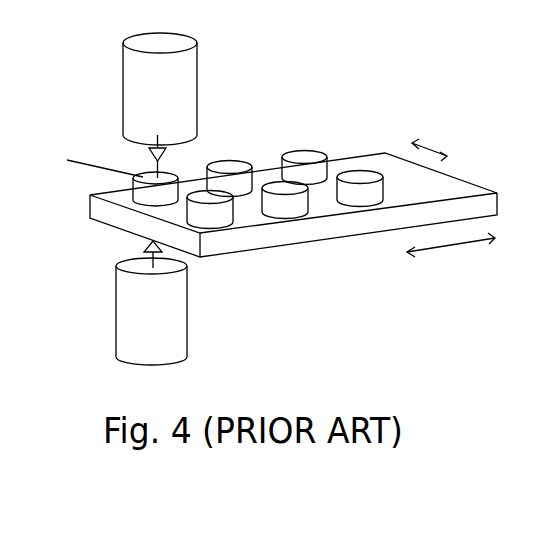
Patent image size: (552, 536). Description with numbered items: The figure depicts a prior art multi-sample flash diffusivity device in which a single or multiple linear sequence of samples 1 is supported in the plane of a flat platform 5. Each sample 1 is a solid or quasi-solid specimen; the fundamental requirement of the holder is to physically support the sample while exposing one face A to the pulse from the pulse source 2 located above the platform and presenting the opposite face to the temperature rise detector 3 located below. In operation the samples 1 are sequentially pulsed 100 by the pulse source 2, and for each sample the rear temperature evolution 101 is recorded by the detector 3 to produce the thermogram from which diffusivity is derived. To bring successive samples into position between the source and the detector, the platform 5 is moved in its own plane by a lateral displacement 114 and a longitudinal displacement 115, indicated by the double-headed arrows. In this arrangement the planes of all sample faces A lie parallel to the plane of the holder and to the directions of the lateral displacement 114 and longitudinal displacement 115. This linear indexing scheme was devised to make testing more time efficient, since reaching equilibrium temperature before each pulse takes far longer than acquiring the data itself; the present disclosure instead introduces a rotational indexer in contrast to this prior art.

The samples 1 is at (140, 190).
The pulse source 2 is at (150, 92).
The temperature rise detector 3 is at (145, 343).
The platform 5 is at (445, 178).
The pulse 100 is at (149, 152).
The rear temperature evolution 101 is at (146, 247).
The lateral displacement 114 is at (433, 148).
The longitudinal displacement 115 is at (443, 248).
The sample face A is at (95, 160).